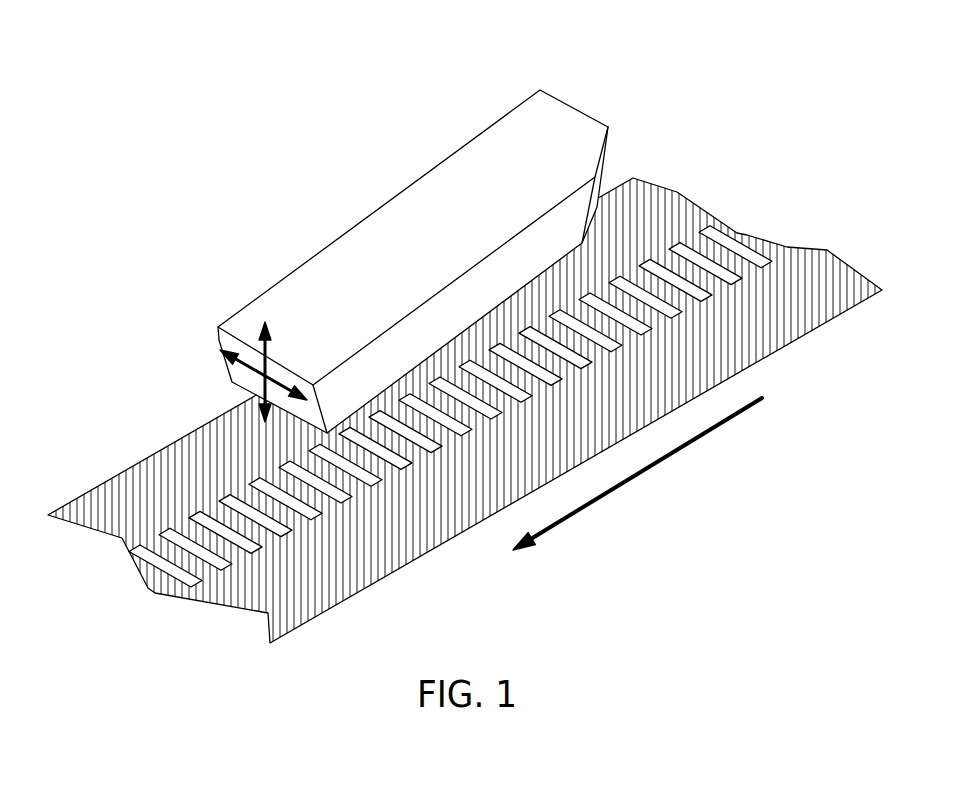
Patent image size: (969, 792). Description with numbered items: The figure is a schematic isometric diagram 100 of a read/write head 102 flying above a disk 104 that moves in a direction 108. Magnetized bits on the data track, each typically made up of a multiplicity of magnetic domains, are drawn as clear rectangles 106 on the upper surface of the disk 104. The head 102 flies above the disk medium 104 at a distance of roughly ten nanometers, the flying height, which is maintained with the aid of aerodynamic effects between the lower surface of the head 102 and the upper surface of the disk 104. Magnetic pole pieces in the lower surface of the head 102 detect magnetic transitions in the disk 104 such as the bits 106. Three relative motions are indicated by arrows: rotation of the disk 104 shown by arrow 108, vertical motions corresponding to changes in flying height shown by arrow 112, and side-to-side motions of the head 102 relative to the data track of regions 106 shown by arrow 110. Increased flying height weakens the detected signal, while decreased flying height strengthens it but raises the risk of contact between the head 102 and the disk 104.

The schematic isometric diagram 100 is at (230, 176).
The read/write head 102 is at (543, 110).
The disk 104 is at (195, 437).
The magnetized bits 106 is at (712, 232).
The direction of disk motion arrow 108 is at (600, 500).
The side-to-side motion arrow 110 is at (242, 357).
The vertical motion arrow 112 is at (268, 340).